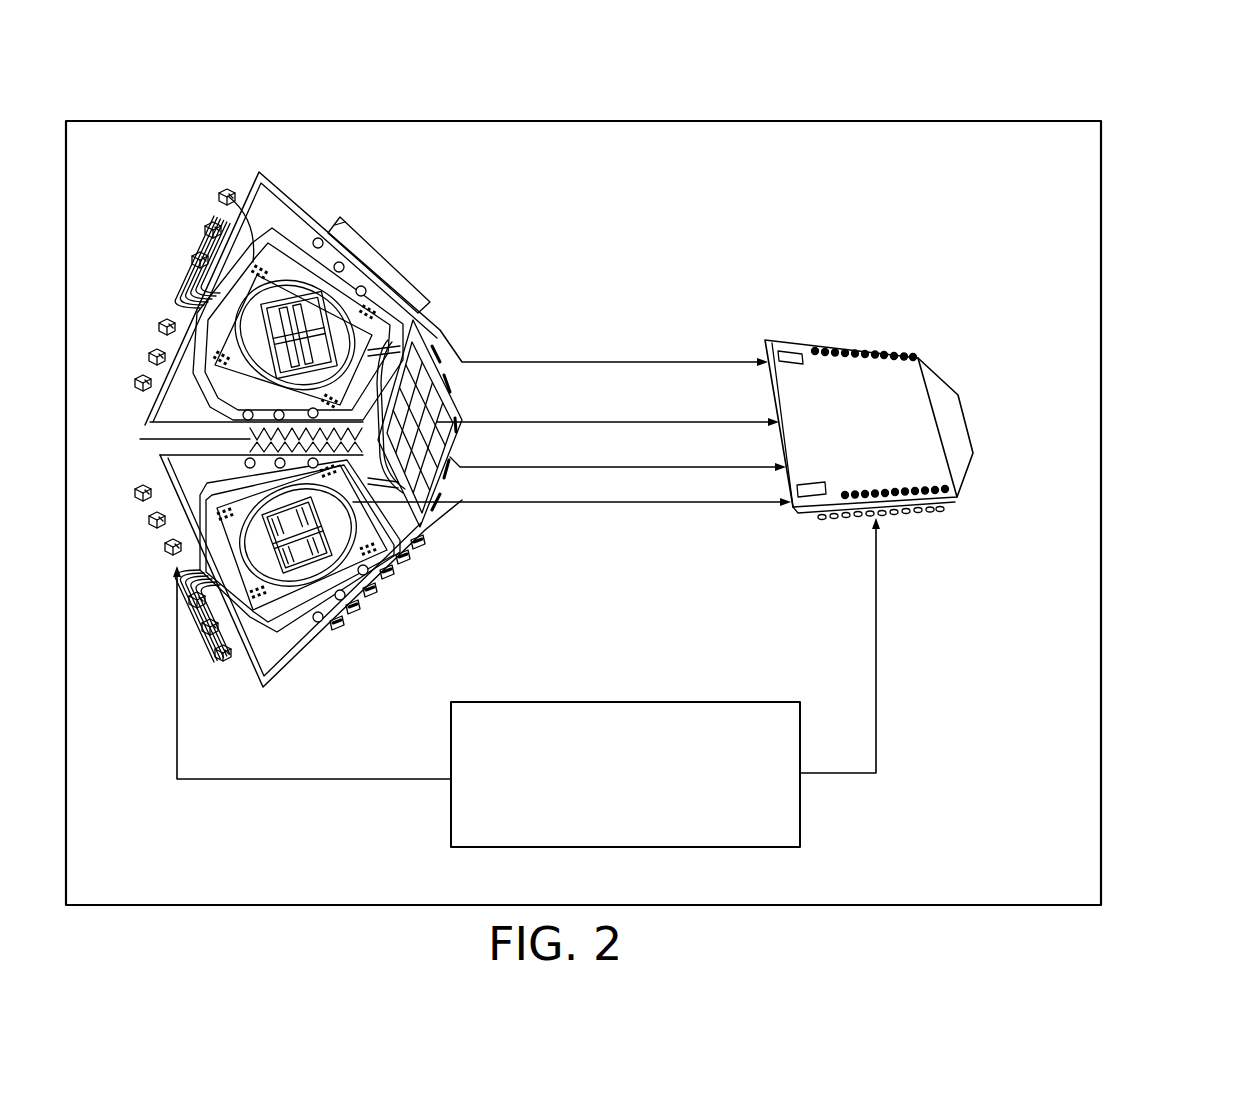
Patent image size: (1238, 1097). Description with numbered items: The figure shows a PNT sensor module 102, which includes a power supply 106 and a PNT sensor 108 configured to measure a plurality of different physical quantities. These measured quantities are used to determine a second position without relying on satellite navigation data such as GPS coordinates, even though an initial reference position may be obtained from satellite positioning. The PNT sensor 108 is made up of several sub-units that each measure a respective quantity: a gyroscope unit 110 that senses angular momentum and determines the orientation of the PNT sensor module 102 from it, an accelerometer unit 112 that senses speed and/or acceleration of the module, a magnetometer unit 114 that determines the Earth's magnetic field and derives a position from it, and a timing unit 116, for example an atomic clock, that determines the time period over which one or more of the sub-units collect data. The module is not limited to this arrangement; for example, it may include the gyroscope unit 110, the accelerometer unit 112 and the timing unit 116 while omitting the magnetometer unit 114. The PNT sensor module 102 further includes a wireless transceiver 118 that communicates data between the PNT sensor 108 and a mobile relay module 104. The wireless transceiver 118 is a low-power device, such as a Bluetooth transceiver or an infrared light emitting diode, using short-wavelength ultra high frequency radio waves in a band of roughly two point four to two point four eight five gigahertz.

The PNT sensor module 102 is at (87, 110).
The mobile relay module 104 is at (973, 422).
The power supply 106 is at (773, 702).
The PNT sensor 108 is at (178, 268).
The gyroscope unit 110 is at (231, 204).
The accelerometer unit 112 is at (347, 220).
The magnetometer unit 114 is at (436, 519).
The timing unit 116 is at (297, 563).
The wireless transceiver 118 is at (836, 336).